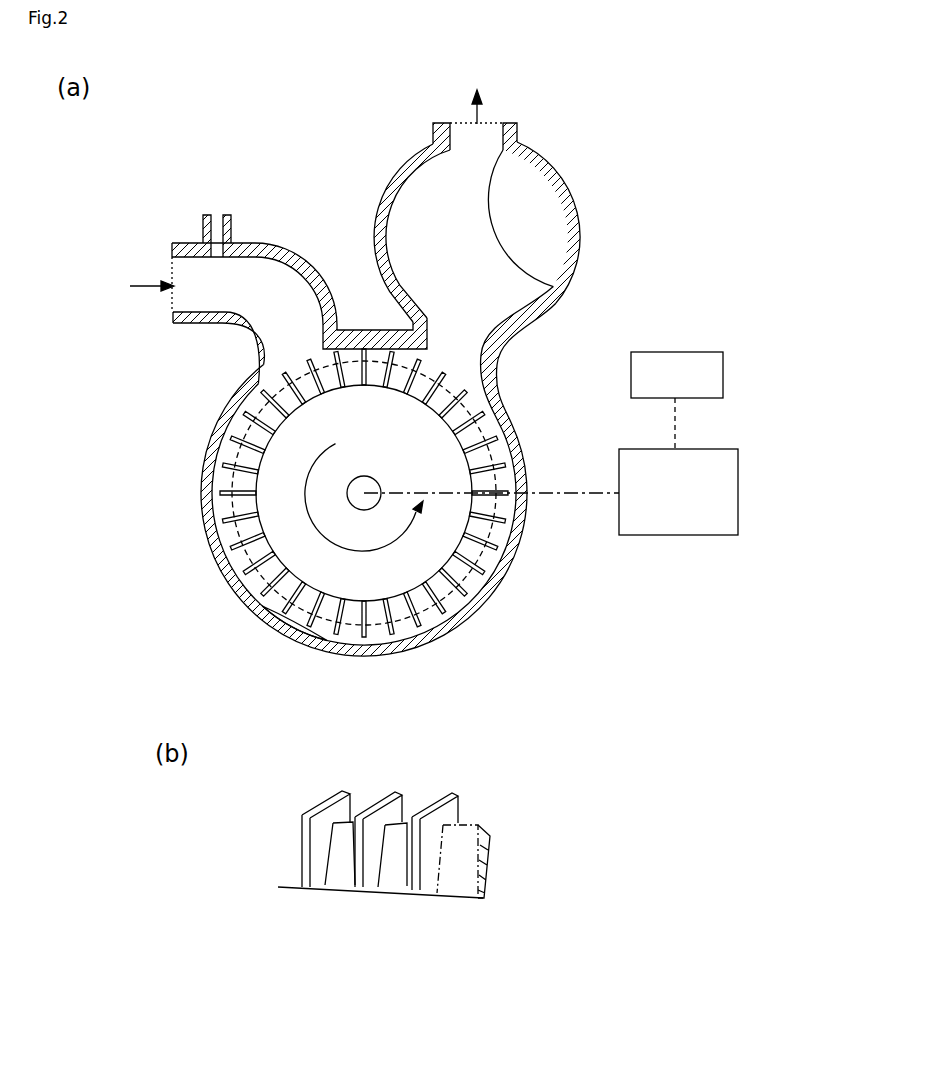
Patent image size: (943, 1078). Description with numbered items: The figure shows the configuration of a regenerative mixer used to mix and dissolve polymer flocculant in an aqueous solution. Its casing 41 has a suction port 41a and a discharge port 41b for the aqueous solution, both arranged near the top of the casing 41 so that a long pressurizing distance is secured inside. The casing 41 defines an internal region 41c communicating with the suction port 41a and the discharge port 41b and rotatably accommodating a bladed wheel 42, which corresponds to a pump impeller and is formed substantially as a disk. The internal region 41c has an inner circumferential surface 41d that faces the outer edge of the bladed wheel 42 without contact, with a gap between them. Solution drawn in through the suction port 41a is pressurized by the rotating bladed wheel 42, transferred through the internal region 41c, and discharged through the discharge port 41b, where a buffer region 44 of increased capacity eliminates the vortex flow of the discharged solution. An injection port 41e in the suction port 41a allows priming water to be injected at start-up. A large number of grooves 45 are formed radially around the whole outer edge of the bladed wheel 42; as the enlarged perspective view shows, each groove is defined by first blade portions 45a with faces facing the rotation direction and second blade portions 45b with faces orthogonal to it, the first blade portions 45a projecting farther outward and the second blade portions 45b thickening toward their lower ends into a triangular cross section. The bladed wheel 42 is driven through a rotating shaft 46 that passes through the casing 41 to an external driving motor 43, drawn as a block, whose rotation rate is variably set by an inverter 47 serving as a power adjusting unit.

The casing 41 is at (213, 553).
The suction port 41a is at (227, 298).
The discharge port 41b is at (512, 137).
The internal region 41c is at (222, 480).
The inner circumferential surface 41d is at (262, 604).
The injection port 41e is at (231, 225).
The bladed wheel 42 is at (445, 541).
The driving motor 43 is at (690, 535).
The buffer region 44 is at (522, 240).
The grooves 45 is at (456, 597).
The first blade portions 45a is at (393, 791).
The second blade portions 45b is at (397, 873).
The rotating shaft 46 is at (556, 491).
The inverter 47 is at (676, 352).